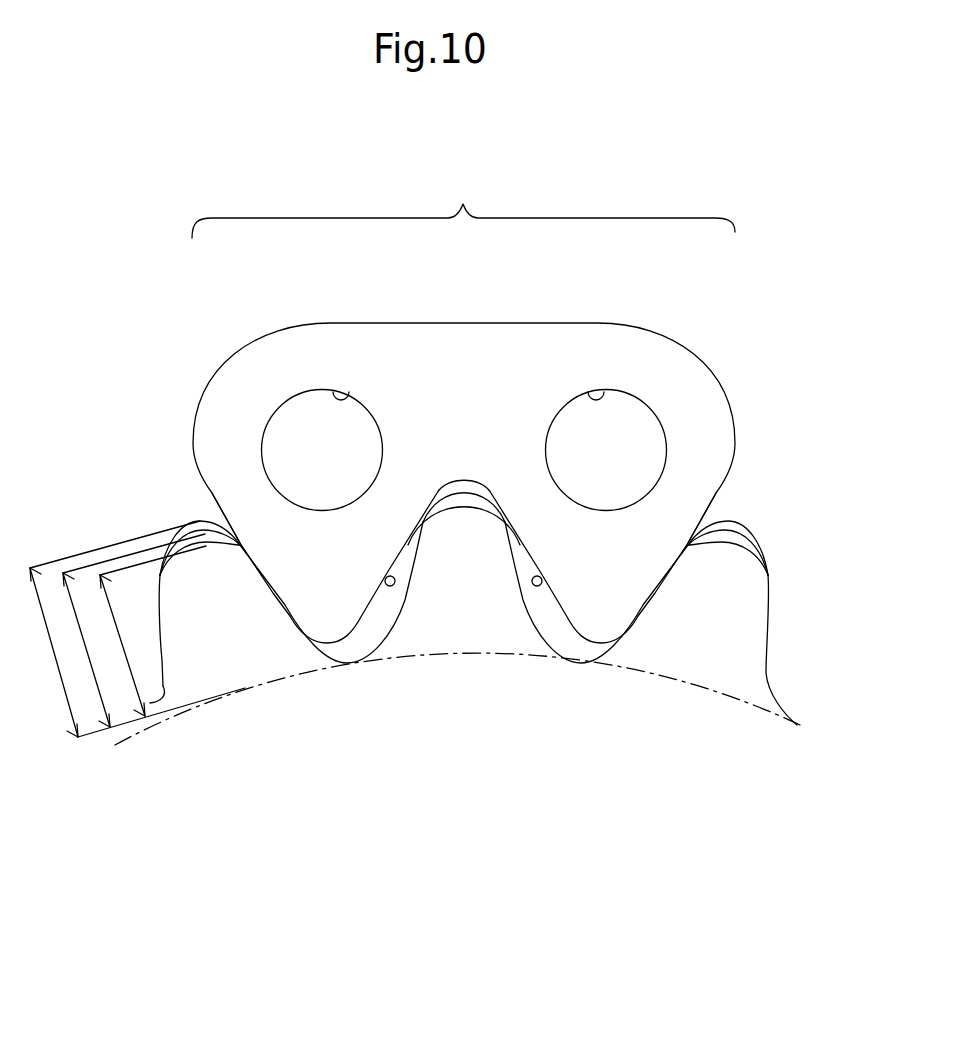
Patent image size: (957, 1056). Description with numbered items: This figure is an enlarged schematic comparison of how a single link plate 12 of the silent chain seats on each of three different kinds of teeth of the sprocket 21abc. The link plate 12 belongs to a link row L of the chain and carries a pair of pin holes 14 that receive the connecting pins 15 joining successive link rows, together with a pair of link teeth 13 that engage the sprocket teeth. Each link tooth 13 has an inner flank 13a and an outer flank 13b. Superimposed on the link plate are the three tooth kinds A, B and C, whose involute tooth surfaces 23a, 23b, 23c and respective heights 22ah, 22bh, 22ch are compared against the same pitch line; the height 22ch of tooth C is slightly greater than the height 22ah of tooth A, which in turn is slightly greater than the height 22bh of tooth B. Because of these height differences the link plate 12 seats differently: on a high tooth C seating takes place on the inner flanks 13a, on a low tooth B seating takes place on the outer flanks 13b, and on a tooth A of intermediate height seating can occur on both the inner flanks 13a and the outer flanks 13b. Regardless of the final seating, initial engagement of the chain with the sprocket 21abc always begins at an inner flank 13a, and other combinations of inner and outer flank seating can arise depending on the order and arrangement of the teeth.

The link plate 12 is at (468, 355).
The link tooth 13 is at (338, 616).
The inner flank 13a is at (386, 578).
The outer flank 13b is at (212, 493).
The pin hole 14 is at (336, 398).
The connecting pin 15 is at (302, 417).
The sprocket 21abc is at (242, 690).
The height of teeth A 22ah is at (134, 630).
The height of teeth B 22bh is at (153, 631).
The height of teeth C 22ch is at (115, 629).
The tooth surfaces of teeth A 23a is at (163, 688).
The tooth surfaces of teeth B 23b is at (189, 670).
The tooth surfaces of teeth C 23c is at (202, 659).
The sprocket tooth A is at (747, 546).
The sprocket tooth B is at (738, 582).
The sprocket tooth C is at (743, 528).
The link row L is at (463, 208).